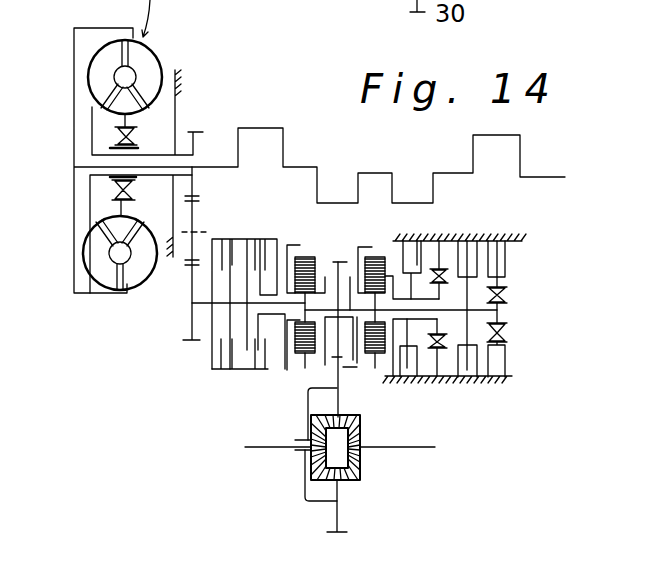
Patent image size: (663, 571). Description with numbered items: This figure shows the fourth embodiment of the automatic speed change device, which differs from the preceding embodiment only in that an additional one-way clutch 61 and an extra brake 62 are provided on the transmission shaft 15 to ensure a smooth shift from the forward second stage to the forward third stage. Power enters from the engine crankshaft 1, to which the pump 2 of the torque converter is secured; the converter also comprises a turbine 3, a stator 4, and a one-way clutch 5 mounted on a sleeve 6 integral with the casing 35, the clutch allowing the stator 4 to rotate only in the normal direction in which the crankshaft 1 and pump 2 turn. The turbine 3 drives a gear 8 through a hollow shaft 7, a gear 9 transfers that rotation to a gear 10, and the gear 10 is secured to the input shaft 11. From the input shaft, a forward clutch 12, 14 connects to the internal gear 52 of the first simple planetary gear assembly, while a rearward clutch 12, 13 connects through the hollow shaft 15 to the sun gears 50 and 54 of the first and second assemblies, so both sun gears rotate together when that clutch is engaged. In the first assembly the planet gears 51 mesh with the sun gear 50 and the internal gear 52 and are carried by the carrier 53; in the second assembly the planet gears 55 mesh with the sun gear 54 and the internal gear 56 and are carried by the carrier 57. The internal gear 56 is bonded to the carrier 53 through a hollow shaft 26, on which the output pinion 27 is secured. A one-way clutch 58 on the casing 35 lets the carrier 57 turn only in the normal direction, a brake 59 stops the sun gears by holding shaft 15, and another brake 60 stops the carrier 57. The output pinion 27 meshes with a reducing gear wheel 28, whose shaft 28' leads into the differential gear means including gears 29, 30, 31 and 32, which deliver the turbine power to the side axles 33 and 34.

The engine crankshaft 1 is at (285, 138).
The pump 2 is at (143, 62).
The turbine 3 is at (102, 58).
The stator 4 is at (118, 107).
The one-way clutch 5 is at (122, 135).
The sleeve 6 is at (153, 150).
The hollow shaft 7 is at (183, 132).
The transmission gear 8 is at (192, 183).
The transmission gear 9 is at (192, 247).
The transmission gear 10 is at (188, 315).
The input shaft 11 is at (198, 358).
The clutch 12 is at (248, 238).
The rearward clutch member 13 is at (222, 250).
The forward clutch member 14 is at (268, 262).
The hollow shaft 15 is at (242, 369).
The hollow shaft 26 is at (327, 339).
The output pinion 27 is at (352, 280).
The reducing gear wheel 28 is at (311, 467).
The motor shaft 28' is at (359, 469).
The differential gear 29 is at (358, 415).
The differential gear 30 is at (347, 480).
The differential gear 31 is at (303, 475).
The differential gear 32 is at (362, 462).
The side axle 33 is at (252, 447).
The side axle 34 is at (418, 450).
The casing 35 is at (498, 383).
The sun gear 50 is at (300, 315).
The planet gears 51 is at (290, 357).
The internal gear 52 is at (307, 257).
The carrier 53 is at (323, 290).
The sun gear 54 is at (375, 320).
The planet gears 55 is at (378, 366).
The internal gear 56 is at (377, 250).
The carrier 57 is at (393, 343).
The one-way clutch 58 is at (445, 268).
The brake 59 is at (485, 252).
The brake 60 is at (420, 257).
The one-way clutch 61 is at (507, 296).
The brake 62 is at (505, 264).